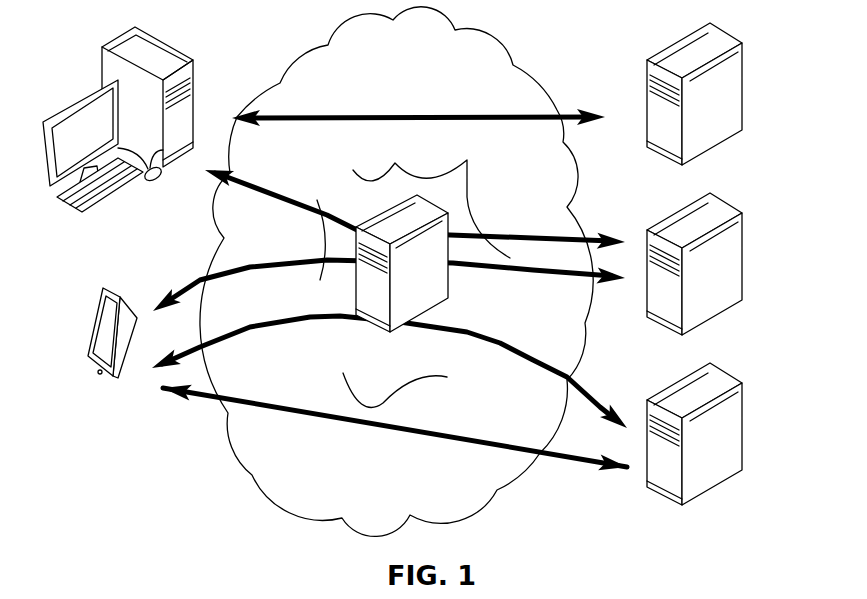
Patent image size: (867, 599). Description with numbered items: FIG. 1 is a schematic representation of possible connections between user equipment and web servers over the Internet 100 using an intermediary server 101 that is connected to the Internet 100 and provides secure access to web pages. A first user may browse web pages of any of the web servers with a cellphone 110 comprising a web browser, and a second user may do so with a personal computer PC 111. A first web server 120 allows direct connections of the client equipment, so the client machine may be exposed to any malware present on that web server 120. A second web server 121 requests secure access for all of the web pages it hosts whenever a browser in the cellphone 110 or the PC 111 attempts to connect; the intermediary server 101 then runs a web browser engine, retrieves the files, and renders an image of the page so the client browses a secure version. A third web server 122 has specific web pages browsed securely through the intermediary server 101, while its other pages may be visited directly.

The Internet 100 is at (235, 474).
The intermediary server 101 is at (418, 224).
The cellphone 110 is at (112, 326).
The personal computer 111 is at (181, 46).
The first web server 120 is at (718, 102).
The second web server 121 is at (718, 278).
The third web server 122 is at (718, 443).